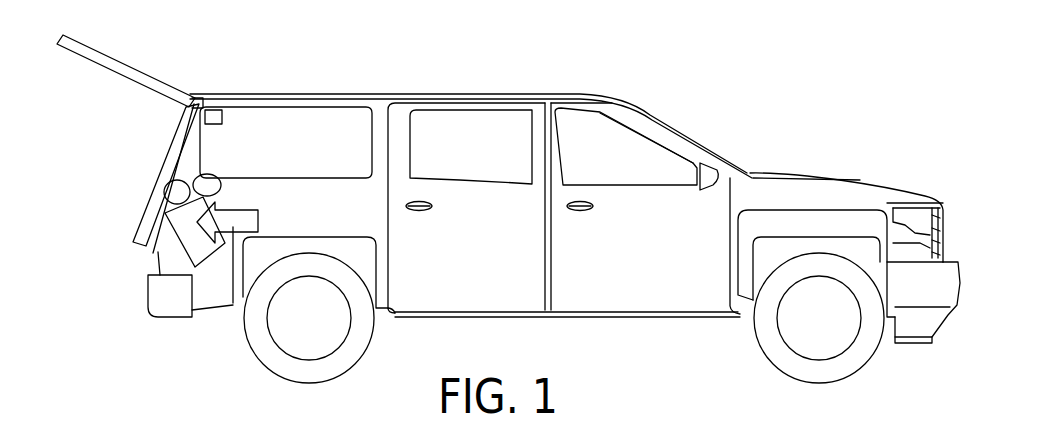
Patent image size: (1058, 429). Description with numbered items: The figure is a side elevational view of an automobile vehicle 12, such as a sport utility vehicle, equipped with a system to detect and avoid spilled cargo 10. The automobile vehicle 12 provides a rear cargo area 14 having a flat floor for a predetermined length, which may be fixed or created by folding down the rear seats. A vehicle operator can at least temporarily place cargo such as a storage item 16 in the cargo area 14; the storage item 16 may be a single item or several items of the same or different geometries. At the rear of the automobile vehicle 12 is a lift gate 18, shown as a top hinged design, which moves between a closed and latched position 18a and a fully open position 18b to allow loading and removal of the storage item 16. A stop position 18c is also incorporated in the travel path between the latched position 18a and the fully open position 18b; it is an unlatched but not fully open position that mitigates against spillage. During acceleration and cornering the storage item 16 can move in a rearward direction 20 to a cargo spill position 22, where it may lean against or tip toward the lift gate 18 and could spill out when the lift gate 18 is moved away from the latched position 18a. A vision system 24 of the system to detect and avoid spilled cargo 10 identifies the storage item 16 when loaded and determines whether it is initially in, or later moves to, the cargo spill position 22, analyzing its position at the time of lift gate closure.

The system to detect and avoid spilled cargo 10 is at (790, 90).
The automobile vehicle 12 is at (790, 192).
The rear cargo area 14 is at (380, 147).
The storage item 16 is at (213, 183).
The lift gate 18 is at (198, 118).
The closed and latched position 18a is at (165, 250).
The fully open position 18b is at (118, 70).
The stop position 18c is at (162, 173).
The rearward direction 20 is at (233, 227).
The cargo spill position 22 is at (186, 247).
The vision system 24 is at (212, 115).